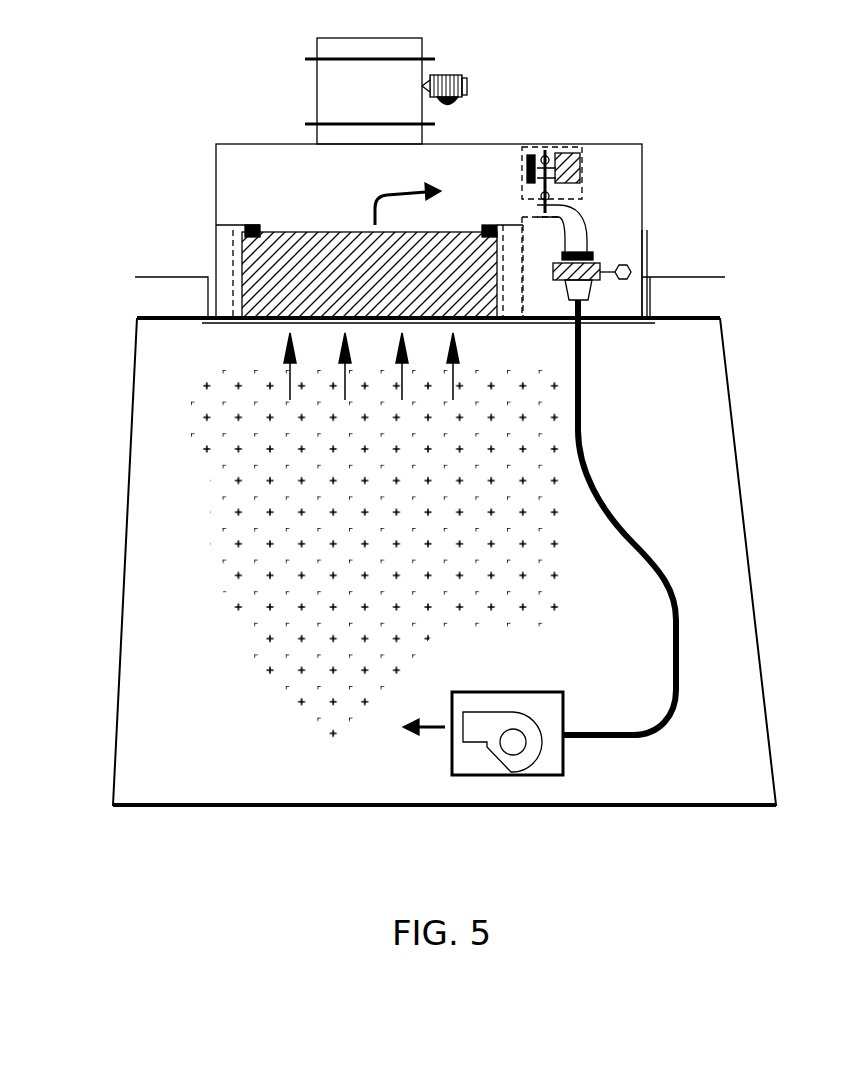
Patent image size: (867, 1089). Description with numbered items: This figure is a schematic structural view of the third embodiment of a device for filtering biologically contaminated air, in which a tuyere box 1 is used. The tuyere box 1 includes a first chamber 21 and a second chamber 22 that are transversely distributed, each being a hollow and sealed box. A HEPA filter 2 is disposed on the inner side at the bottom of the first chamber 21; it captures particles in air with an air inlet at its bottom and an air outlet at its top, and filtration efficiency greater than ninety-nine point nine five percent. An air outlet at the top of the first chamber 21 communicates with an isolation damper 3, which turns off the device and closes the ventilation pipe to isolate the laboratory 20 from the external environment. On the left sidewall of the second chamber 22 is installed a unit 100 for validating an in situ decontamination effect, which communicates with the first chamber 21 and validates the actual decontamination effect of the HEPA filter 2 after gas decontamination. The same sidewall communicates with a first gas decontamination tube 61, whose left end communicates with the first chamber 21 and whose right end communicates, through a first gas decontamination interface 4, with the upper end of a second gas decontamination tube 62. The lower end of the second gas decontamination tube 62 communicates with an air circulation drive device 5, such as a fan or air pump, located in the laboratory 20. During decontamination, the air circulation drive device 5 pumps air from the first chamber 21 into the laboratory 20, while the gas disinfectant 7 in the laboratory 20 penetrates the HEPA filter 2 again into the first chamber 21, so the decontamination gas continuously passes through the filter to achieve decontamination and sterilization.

The tuyere box 1 is at (270, 144).
The HEPA filter 2 is at (280, 260).
The isolation damper 3 is at (422, 58).
The first gas decontamination interface 4 is at (592, 253).
The air circulation drive device 5 is at (513, 692).
The gas disinfectant 7 is at (260, 563).
The laboratory 20 is at (168, 567).
The first chamber 21 is at (463, 170).
The second chamber 22 is at (630, 250).
The first gas decontamination tube 61 is at (578, 238).
The second gas decontamination tube 62 is at (633, 540).
The unit for validating an in situ decontamination effect 100 is at (555, 152).